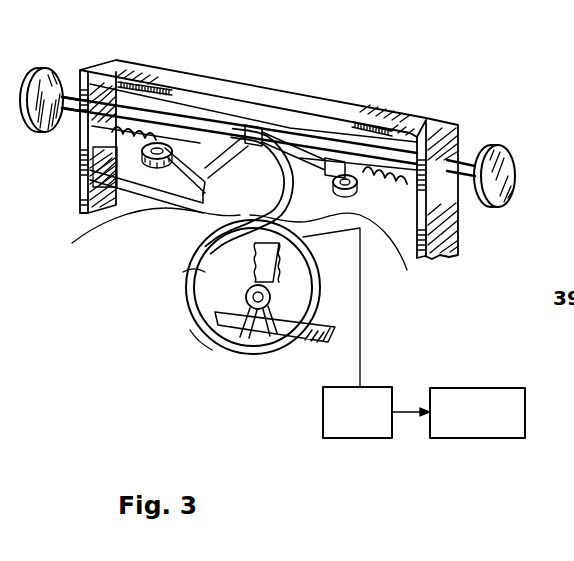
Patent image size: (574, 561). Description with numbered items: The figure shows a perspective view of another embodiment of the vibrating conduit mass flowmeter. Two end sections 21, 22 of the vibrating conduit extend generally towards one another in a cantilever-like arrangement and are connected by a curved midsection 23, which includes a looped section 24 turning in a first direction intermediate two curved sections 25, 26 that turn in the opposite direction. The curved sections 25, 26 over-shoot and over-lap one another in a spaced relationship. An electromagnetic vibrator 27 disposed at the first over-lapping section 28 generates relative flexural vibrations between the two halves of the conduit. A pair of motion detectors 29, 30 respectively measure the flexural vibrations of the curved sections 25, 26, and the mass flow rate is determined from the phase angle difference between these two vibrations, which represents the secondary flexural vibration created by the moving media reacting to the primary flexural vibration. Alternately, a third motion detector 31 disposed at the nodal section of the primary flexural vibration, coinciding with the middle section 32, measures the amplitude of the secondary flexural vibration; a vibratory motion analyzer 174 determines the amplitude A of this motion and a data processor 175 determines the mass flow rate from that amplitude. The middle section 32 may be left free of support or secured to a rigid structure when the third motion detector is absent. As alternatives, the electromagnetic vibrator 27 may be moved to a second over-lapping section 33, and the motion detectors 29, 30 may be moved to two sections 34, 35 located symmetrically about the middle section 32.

The end section 21 is at (157, 143).
The end section 22 is at (330, 160).
The curved midsection 23 is at (207, 220).
The looped section 24 is at (218, 342).
The curved section 25 is at (335, 253).
The curved section 26 is at (139, 232).
The electromagnetic vibrator 27 is at (252, 140).
The first over-lapping section 28 is at (232, 130).
The motion detector 29 is at (393, 128).
The motion detector 30 is at (178, 100).
The third motion detector 31 is at (191, 338).
The middle section 32 is at (263, 347).
The second over-lapping section 33 is at (188, 260).
The section 34 is at (183, 272).
The section 35 is at (318, 287).
The vibratory motion analyzer 174 is at (352, 440).
The data processor 175 is at (492, 440).